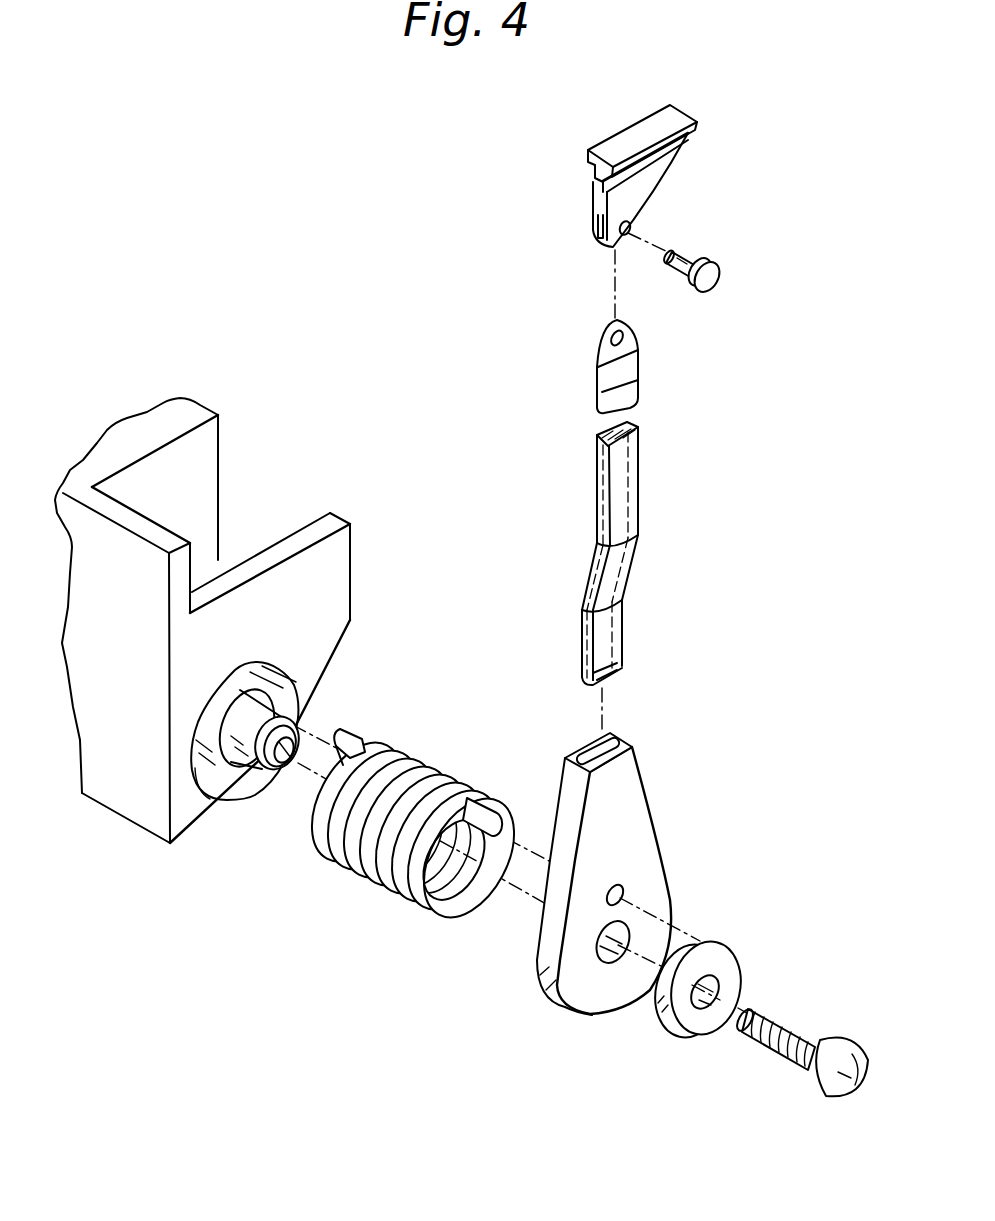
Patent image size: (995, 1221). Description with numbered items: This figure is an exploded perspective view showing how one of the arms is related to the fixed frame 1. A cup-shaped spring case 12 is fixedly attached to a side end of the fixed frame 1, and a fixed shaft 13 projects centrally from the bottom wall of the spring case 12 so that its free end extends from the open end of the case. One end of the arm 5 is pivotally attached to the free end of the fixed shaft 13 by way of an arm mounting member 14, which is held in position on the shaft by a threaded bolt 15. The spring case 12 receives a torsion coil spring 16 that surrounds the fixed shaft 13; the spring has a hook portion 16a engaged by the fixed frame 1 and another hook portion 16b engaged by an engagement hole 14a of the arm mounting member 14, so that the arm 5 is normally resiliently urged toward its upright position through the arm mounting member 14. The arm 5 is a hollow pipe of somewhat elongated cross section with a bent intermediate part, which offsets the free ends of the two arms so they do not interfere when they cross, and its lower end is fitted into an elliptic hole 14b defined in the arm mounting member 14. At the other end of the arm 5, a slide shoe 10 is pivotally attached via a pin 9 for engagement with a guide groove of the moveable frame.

The fixed frame 1 is at (343, 572).
The arm 5 is at (627, 558).
The pin 9 is at (685, 253).
The slide shoe 10 is at (632, 133).
The spring case 12 is at (200, 777).
The fixed shaft 13 is at (237, 757).
The arm mounting member 14 is at (638, 847).
The engagement hole 14a is at (622, 893).
The elliptic hole 14b is at (610, 735).
The threaded bolt 15 is at (857, 1090).
The torsion coil spring 16 is at (499, 819).
The hook portion 16a is at (347, 733).
The hook portion 16b is at (482, 807).